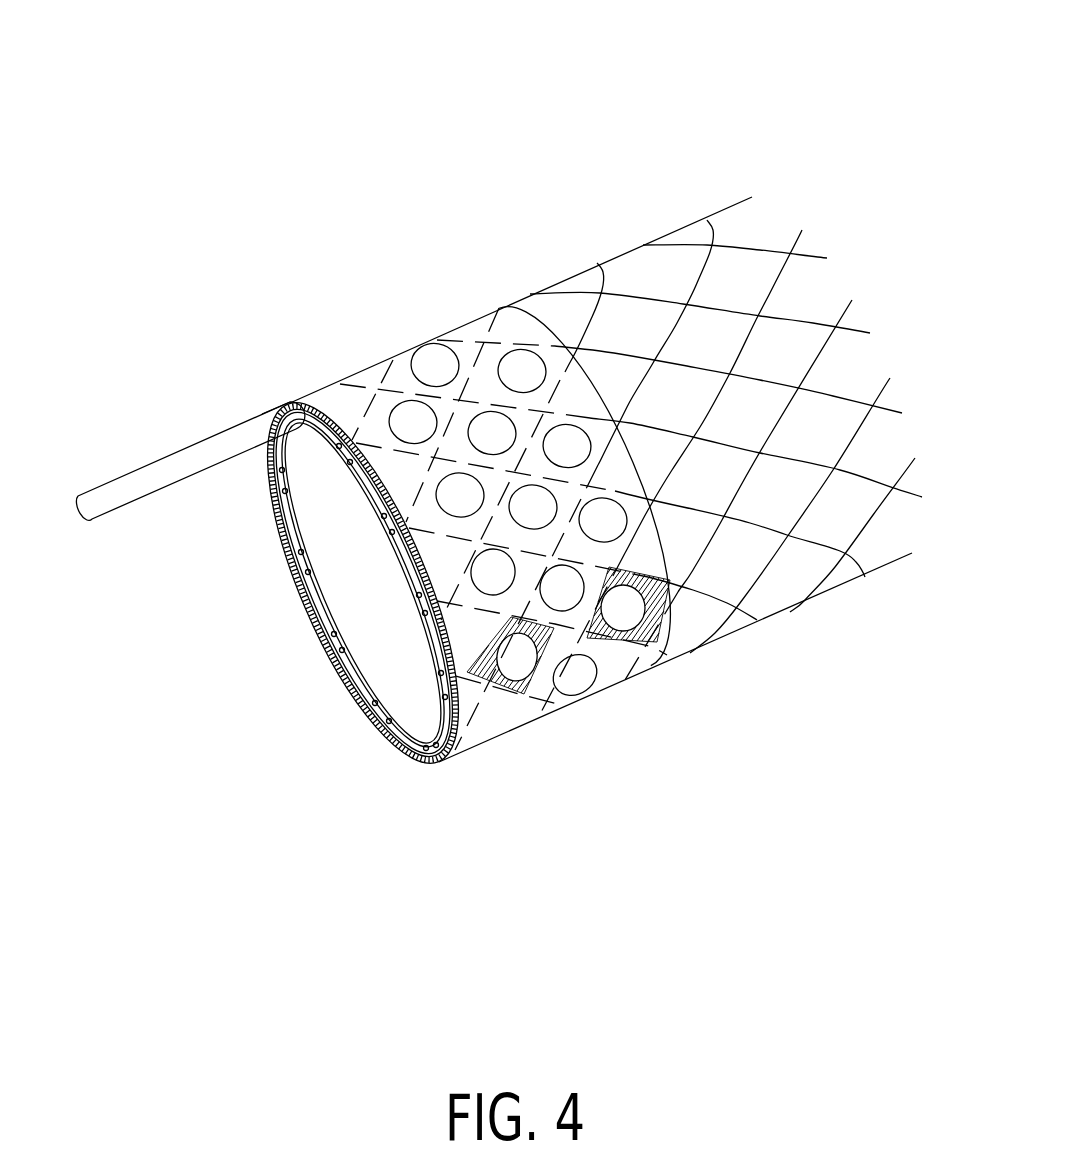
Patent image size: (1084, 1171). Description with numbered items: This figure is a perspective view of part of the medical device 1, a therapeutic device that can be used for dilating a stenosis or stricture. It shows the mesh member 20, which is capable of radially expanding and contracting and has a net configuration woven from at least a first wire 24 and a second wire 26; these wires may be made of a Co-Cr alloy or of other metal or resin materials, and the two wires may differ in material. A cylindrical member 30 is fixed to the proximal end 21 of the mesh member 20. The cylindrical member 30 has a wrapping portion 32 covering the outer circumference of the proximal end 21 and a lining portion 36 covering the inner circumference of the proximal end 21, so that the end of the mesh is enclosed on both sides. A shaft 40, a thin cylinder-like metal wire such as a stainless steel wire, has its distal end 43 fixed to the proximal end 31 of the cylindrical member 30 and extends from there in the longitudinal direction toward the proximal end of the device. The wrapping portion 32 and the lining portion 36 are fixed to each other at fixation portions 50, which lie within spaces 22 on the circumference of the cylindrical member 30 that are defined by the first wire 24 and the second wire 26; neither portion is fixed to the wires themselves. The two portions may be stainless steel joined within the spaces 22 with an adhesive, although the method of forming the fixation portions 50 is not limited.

The medical device 1 is at (558, 83).
The mesh member 20 is at (586, 257).
The proximal end of the mesh member 21 is at (424, 764).
The spaces 22 is at (520, 667).
The first wire 24 is at (747, 248).
The second wire 26 is at (753, 590).
The cylindrical member 30 is at (665, 650).
The proximal end of the cylindrical member 31 is at (282, 540).
The wrapping portion 32 is at (337, 414).
The lining portion 36 is at (323, 595).
The shaft 40 is at (183, 451).
The distal end of the shaft 43 is at (290, 400).
The fixation portions 50 is at (440, 362).